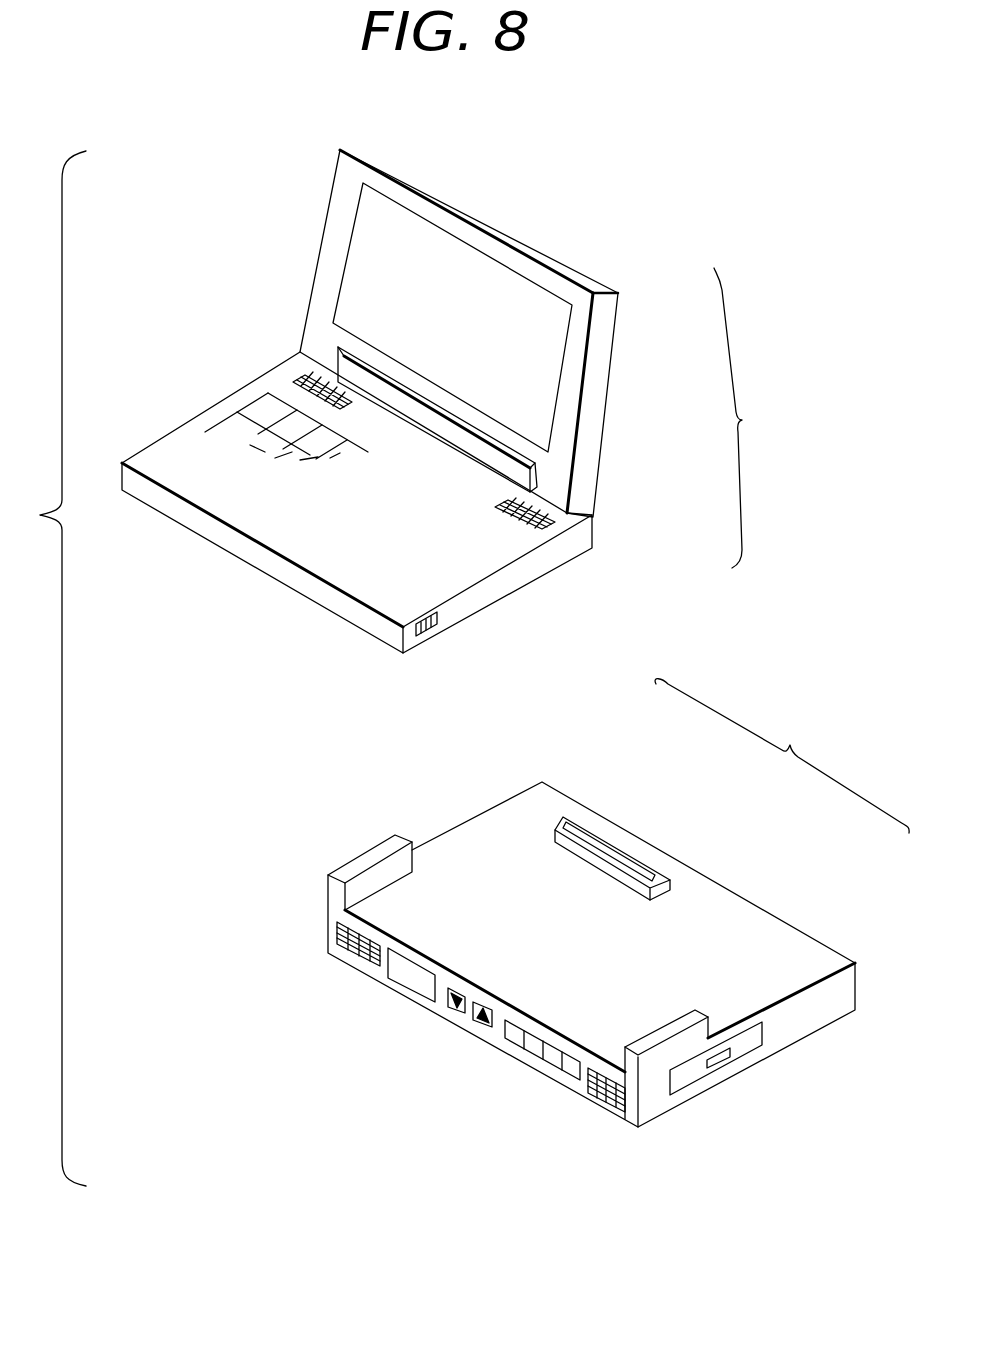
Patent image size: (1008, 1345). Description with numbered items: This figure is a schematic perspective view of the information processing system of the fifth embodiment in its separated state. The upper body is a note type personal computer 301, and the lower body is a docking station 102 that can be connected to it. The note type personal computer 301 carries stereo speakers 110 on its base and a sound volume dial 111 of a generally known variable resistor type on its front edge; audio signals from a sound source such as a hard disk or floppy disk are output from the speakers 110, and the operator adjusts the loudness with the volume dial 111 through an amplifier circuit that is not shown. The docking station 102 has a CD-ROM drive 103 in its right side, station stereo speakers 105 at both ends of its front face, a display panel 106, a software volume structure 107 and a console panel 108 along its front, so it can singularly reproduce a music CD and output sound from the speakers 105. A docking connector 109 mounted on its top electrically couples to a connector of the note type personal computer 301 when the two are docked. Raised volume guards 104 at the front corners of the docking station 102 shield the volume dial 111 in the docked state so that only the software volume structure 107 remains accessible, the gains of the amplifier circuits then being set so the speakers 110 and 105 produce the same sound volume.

The note type personal computer 301 is at (813, 436).
The docking station 102 is at (836, 735).
The CD-ROM drive 103 is at (745, 1050).
The volume guards 104 is at (353, 864).
The station stereo speakers 105 is at (337, 937).
The display panel 106 is at (408, 982).
The software volume structure 107 is at (477, 1021).
The console panel 108 is at (578, 1101).
The docking connector 109 is at (677, 890).
The stereo speakers 110 is at (300, 374).
The sound volume dial 111 is at (430, 636).